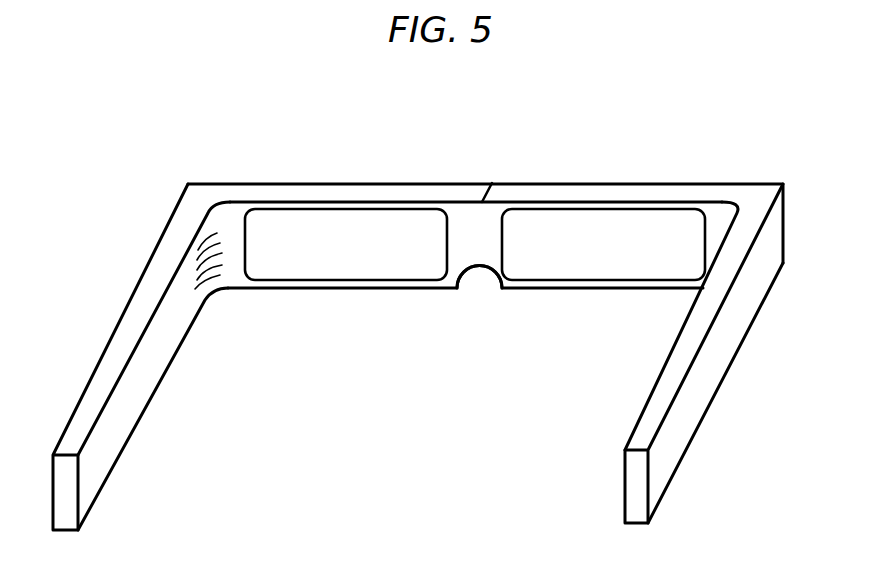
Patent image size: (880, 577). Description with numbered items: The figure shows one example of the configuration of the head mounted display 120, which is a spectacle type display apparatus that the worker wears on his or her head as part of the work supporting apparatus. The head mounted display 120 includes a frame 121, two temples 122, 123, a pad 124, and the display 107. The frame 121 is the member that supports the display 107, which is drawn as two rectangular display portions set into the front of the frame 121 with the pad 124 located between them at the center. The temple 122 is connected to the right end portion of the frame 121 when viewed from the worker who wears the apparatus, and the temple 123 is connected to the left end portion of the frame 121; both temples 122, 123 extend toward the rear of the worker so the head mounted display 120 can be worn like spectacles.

The head mounted display 120 is at (409, 299).
The frame 121 is at (547, 183).
The temple 122 is at (628, 447).
The temple 123 is at (145, 272).
The pad 124 is at (473, 273).
The display 107 is at (283, 283).